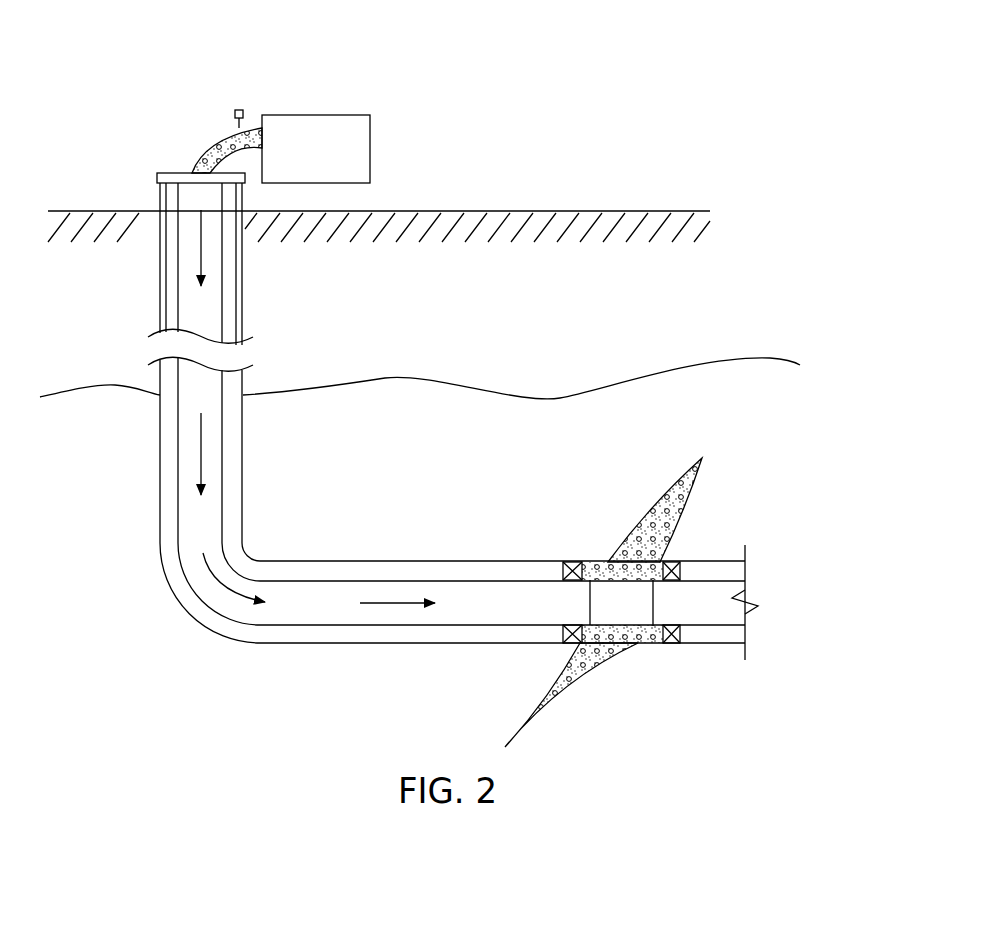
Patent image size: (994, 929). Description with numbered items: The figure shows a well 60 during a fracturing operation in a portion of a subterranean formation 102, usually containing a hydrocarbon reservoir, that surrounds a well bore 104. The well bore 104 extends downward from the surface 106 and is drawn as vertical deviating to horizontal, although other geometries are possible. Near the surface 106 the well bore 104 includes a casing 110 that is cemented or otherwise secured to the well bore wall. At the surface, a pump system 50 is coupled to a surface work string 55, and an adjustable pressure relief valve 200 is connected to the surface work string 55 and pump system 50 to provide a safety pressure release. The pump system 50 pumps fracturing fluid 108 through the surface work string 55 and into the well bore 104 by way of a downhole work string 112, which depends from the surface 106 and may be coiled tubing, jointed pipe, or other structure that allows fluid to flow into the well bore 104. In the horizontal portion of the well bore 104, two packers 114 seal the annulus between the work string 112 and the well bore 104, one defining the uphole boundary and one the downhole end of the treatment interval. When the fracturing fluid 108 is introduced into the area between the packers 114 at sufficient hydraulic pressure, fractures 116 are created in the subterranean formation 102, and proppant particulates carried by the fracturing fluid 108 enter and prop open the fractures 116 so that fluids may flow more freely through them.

The surface work string 55 is at (216, 62).
The adjustable pressure relief valve 200 is at (241, 108).
The pump system 50 is at (315, 115).
The fracturing fluid 108 is at (215, 145).
The surface 106 is at (533, 210).
The well bore 104 is at (173, 289).
The casing 110 is at (163, 309).
The work string 112 is at (177, 490).
The well 60 is at (195, 632).
The subterranean formation 102 is at (447, 451).
The packers 114 is at (572, 561).
The fractures 116 is at (654, 502).